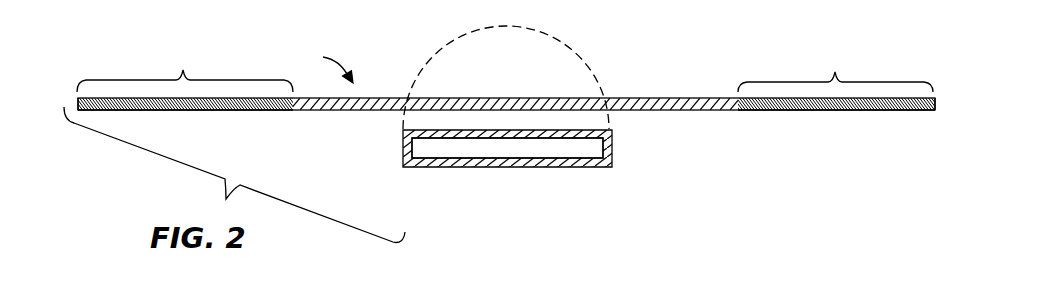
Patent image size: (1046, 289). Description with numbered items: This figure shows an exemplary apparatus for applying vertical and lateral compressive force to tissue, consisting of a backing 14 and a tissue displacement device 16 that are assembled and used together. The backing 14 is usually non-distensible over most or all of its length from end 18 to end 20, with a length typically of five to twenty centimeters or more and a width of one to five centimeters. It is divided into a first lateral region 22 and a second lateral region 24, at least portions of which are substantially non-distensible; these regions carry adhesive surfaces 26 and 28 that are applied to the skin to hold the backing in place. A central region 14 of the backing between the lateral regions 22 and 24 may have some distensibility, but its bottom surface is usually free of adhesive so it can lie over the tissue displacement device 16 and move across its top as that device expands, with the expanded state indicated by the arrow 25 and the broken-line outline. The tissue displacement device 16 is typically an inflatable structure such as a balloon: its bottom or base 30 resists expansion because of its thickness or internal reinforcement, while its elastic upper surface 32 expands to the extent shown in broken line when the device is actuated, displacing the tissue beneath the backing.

The backing 14 is at (663, 98).
The tissue displacement device 16 is at (612, 148).
The end 18 is at (76, 101).
The end 20 is at (937, 99).
The first lateral region 22 is at (185, 76).
The second lateral region 24 is at (836, 77).
The direction arrow 25 is at (319, 63).
The adhesive surface 26 is at (222, 110).
The adhesive surface 28 is at (840, 110).
The base 30 is at (502, 167).
The upper surface 32 is at (468, 135).